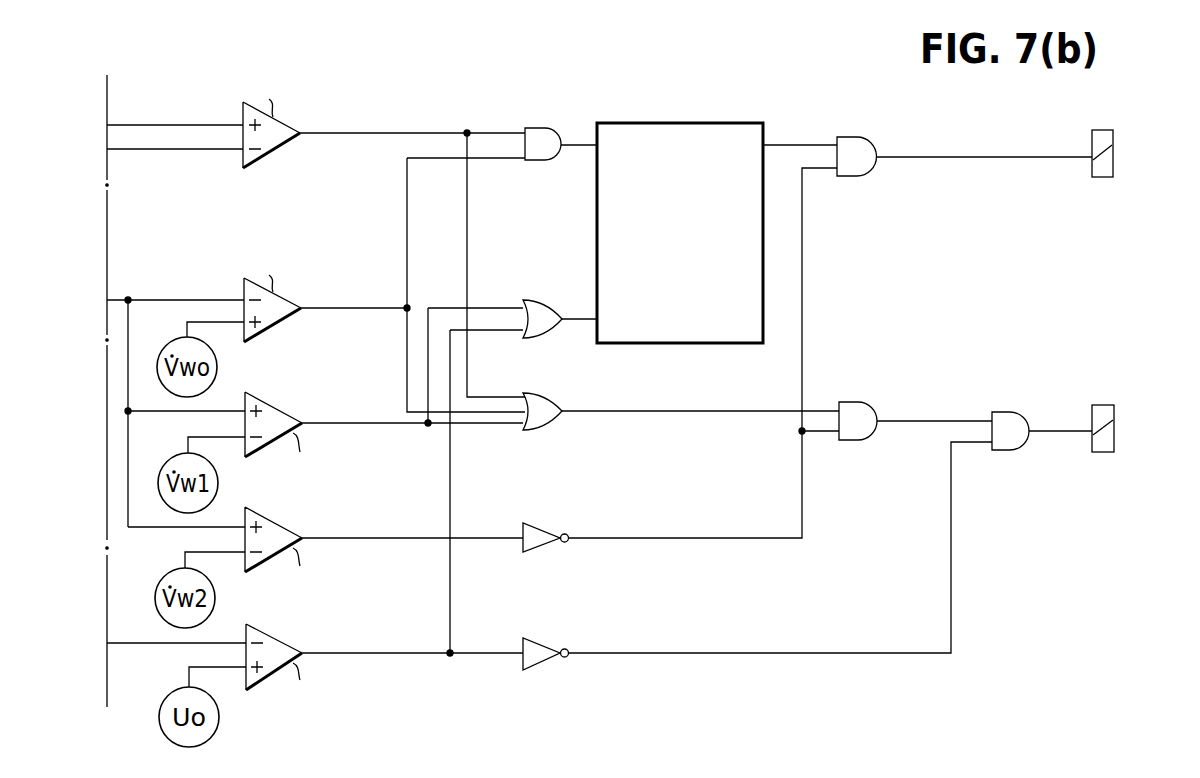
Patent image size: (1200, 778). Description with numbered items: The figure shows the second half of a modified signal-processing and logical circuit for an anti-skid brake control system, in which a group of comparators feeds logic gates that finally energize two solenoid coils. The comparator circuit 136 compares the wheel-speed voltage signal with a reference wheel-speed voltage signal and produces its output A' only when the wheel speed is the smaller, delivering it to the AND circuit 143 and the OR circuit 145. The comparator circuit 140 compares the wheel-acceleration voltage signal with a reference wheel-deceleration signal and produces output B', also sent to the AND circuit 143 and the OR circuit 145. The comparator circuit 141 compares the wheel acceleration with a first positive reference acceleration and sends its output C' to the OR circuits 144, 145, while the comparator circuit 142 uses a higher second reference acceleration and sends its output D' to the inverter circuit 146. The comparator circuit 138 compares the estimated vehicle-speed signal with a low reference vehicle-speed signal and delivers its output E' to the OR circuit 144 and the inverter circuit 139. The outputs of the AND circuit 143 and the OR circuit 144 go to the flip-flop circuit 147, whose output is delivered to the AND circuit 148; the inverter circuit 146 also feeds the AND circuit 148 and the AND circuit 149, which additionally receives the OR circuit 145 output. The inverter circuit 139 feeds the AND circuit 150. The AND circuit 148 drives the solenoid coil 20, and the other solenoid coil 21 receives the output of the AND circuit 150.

The solenoid coil 20 is at (1113, 138).
The solenoid coil 21 is at (1115, 410).
The comparator circuit 136 is at (280, 148).
The comparator circuit 138 is at (268, 634).
The inverter circuit 139 is at (547, 665).
The comparator circuit 140 is at (281, 322).
The comparator circuit 141 is at (266, 402).
The comparator circuit 142 is at (268, 518).
The AND circuit 143 is at (542, 128).
The OR circuit 144 is at (541, 338).
The OR circuit 145 is at (560, 420).
The inverter circuit 146 is at (556, 546).
The flip-flop circuit 147 is at (683, 123).
The AND circuit 148 is at (865, 137).
The AND circuit 149 is at (860, 402).
The AND circuit 150 is at (1005, 450).